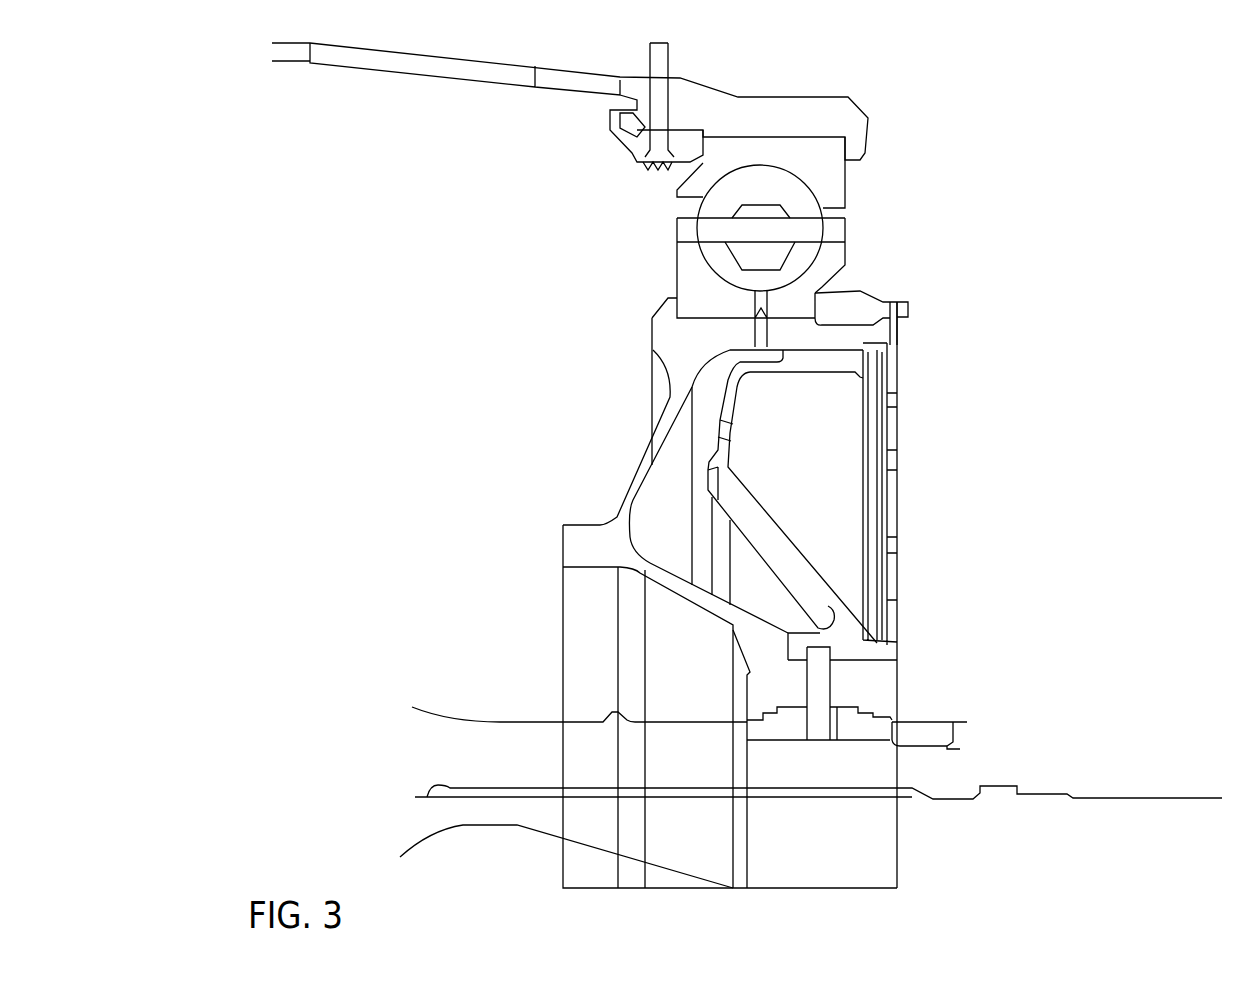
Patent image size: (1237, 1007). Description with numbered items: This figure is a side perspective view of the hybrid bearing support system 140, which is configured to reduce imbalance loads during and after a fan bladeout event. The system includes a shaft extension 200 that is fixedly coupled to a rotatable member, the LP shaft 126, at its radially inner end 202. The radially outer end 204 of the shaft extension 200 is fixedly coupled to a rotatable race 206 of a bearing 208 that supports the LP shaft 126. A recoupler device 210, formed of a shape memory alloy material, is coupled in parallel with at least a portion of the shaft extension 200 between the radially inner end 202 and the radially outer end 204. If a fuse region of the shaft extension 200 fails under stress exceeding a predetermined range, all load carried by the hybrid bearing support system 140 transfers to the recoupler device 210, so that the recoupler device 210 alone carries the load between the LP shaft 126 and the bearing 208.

The LP shaft 126 is at (888, 773).
The hybrid bearing support system 140 is at (622, 465).
The shaft extension 200 is at (573, 540).
The radially inner end 202 is at (890, 688).
The radially outer end 204 is at (693, 337).
The rotatable race 206 is at (847, 265).
The bearing 208 is at (873, 209).
The recoupler device 210 is at (800, 562).